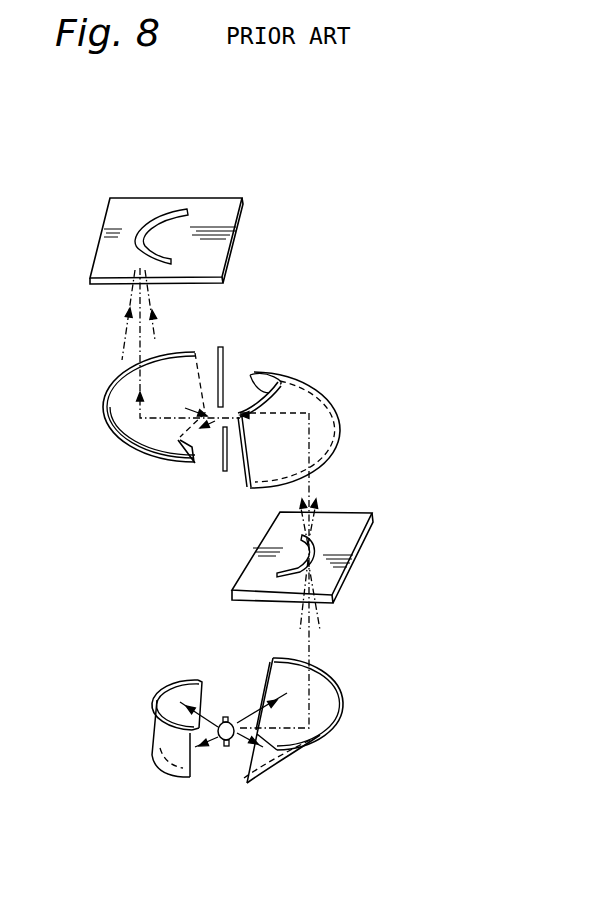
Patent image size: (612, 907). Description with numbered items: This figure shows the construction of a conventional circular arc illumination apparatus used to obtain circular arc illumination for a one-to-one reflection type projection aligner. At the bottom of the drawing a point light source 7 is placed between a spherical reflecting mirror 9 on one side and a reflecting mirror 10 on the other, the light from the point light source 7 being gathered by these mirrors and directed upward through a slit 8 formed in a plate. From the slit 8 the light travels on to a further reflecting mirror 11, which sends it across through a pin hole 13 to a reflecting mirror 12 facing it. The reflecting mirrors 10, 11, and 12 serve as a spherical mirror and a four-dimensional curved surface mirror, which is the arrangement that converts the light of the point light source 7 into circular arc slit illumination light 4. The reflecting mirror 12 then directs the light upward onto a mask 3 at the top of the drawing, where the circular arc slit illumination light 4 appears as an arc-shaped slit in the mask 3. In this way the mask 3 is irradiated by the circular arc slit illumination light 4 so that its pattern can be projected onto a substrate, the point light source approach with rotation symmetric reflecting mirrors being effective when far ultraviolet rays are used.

The mask 3 is at (224, 218).
The circular arc slit illumination light 4 is at (187, 210).
The point light source 7 is at (225, 718).
The slit 8 is at (318, 538).
The spherical reflecting mirror 9 is at (187, 682).
The reflecting mirror 10 is at (344, 705).
The reflecting mirror 11 is at (305, 392).
The reflecting mirror 12 is at (145, 438).
The pin hole 13 is at (224, 468).